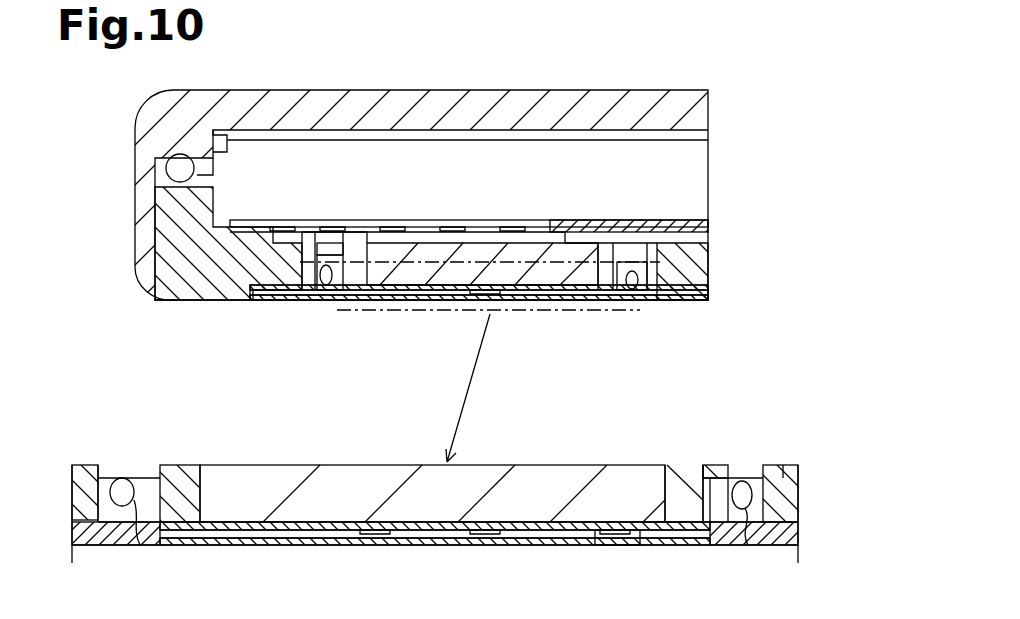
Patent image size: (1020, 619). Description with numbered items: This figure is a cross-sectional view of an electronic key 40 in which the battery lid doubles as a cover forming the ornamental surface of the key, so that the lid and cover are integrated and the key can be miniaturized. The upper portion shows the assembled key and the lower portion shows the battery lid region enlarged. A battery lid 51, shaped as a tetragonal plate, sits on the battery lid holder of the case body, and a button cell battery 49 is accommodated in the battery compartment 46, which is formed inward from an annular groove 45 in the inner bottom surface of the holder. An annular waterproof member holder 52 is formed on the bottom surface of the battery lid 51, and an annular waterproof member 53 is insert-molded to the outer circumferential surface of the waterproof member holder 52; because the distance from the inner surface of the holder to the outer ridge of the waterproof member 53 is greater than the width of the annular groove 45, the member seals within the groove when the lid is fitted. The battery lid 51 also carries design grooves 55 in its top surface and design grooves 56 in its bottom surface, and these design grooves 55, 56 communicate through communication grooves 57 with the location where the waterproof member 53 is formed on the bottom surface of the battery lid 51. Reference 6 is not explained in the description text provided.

The cover plate 6 is at (702, 118).
The electronic key 40 is at (734, 166).
The annular groove 45 is at (158, 465).
The battery compartment 46 is at (655, 482).
The battery 49 is at (459, 247).
The battery lid 51 is at (688, 303).
The waterproof member holder 52 is at (336, 305).
The waterproof member 53 is at (310, 300).
The design grooves 55 is at (524, 302).
The design grooves 56 is at (490, 303).
The communication grooves 57 is at (378, 300).